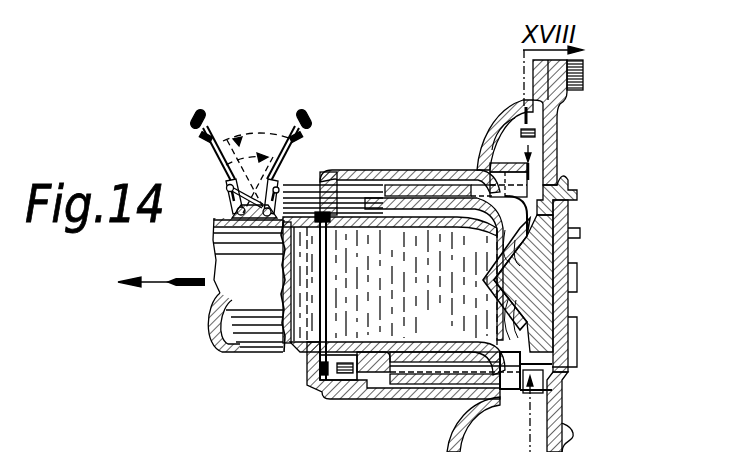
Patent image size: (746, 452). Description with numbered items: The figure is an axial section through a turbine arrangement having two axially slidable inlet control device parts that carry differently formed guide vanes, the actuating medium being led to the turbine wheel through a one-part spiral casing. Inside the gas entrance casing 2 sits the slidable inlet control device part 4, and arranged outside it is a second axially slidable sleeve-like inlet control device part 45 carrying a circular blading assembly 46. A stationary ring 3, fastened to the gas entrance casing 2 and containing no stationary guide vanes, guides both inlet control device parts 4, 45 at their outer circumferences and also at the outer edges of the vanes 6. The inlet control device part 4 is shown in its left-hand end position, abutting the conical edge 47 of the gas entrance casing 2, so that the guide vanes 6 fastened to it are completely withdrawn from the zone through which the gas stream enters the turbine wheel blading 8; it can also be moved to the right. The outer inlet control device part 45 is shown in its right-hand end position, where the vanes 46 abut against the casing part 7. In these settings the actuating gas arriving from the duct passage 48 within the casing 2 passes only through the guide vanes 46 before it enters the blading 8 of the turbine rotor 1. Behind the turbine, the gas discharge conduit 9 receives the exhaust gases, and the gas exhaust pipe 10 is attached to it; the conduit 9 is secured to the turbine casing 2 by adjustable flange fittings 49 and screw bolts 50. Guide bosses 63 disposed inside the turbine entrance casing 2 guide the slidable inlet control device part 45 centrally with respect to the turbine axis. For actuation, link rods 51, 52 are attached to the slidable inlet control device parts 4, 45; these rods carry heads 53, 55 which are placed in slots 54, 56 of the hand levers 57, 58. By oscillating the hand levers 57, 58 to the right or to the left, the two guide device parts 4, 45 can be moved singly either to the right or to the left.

The turbine rotor 1 is at (525, 263).
The gas entrance casing 2 is at (499, 118).
The stationary ring 3 is at (491, 134).
The inlet control device part 4 is at (402, 205).
The guide vanes 6 is at (507, 170).
The casing part 7 is at (557, 134).
The turbine wheel blading 8 is at (504, 233).
The gas discharge conduit 9 is at (443, 342).
The gas exhaust pipe 10 is at (236, 352).
The sleevelike inlet control device part 45 is at (397, 184).
The circular blading assembly 46 is at (557, 177).
The conical edge 47 is at (490, 178).
The duct passage 48 is at (473, 424).
The adjustable flange fittings 49 is at (366, 400).
The screw bolts 50 is at (320, 368).
The link rod 51 is at (306, 296).
The link rod 52 is at (338, 183).
The head 53 is at (230, 196).
The slot 54 is at (224, 181).
The head 55 is at (281, 182).
The slot 56 is at (268, 168).
The hand lever 57 is at (199, 113).
The hand lever 58 is at (312, 113).
The guide bosses 63 is at (412, 400).